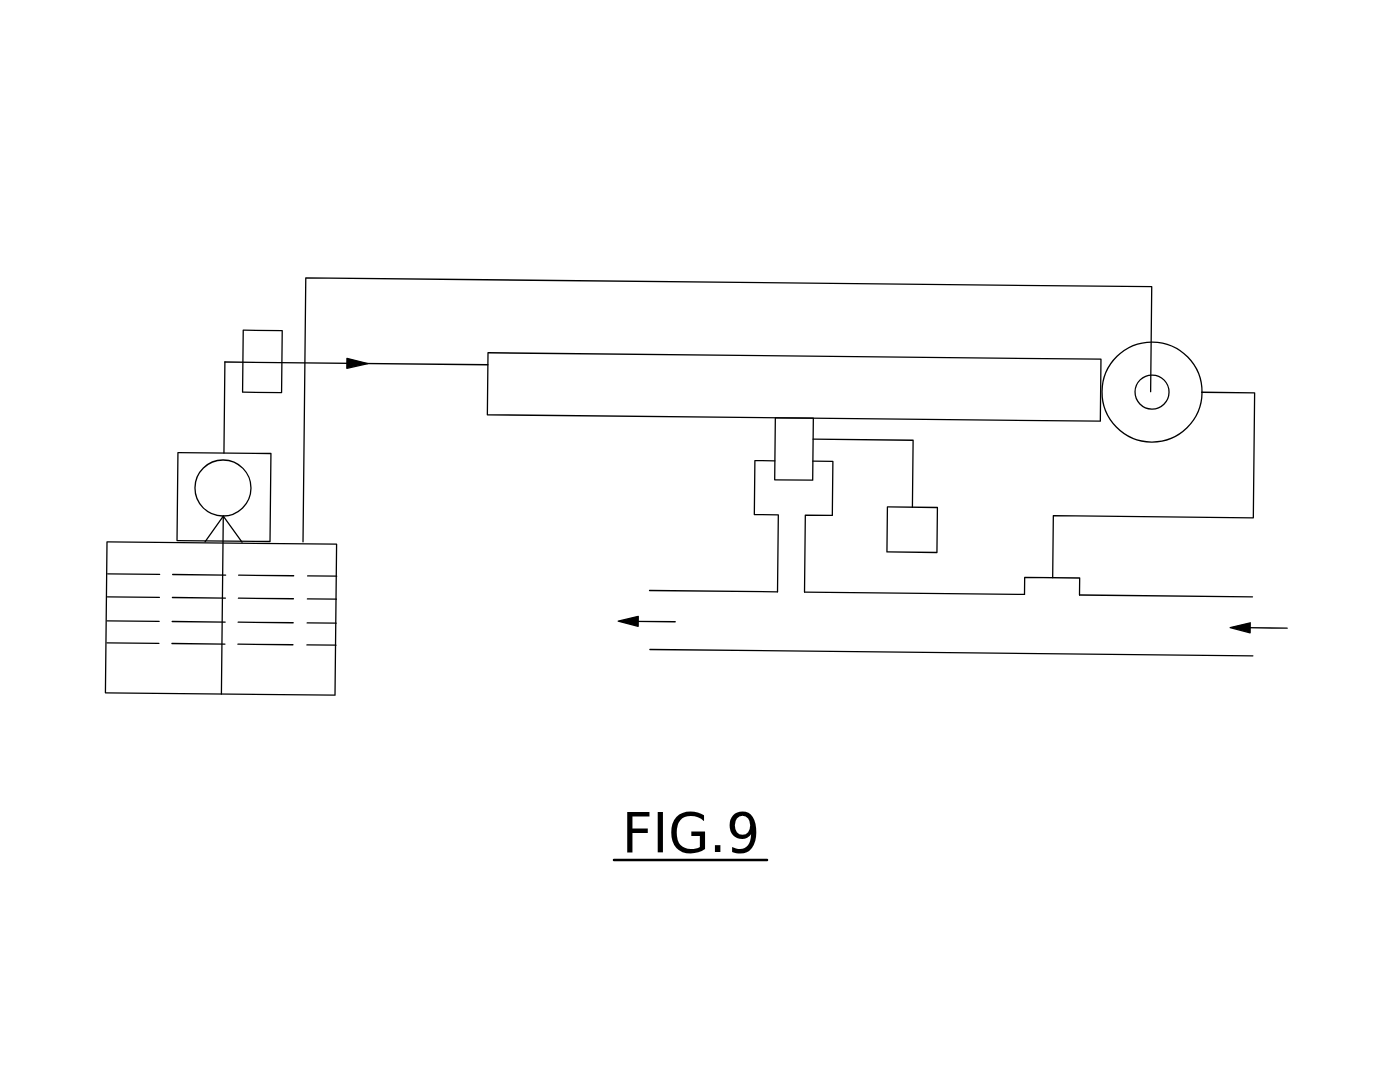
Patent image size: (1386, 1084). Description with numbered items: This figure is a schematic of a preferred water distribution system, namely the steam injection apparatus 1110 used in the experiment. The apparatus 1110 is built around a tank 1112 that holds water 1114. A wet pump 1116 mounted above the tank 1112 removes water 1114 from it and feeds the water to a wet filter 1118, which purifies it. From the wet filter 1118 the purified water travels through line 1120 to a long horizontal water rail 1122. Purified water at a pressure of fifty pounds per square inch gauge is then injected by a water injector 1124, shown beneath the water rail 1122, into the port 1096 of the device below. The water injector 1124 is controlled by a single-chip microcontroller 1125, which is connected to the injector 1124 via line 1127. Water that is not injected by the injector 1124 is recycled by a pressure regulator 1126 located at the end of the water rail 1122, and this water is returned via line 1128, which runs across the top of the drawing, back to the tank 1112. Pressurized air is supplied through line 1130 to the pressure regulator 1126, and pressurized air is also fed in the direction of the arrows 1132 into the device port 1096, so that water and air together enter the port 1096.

The apparatus 1110 is at (660, 205).
The tank 1112 is at (339, 644).
The water 1114 is at (270, 633).
The wet pump 1116 is at (193, 513).
The wet filter 1118 is at (266, 335).
The line 1120 is at (319, 365).
The water rail 1122 is at (776, 356).
The water injector 1124 is at (773, 436).
The single-chip microcontroller 1125 is at (938, 533).
The pressure regulator 1126 is at (1166, 360).
The line 1127 is at (915, 466).
The line 1128 is at (991, 282).
The line 1130 is at (1253, 442).
The arrows 1132 is at (1269, 604).
The port 1096 is at (752, 627).